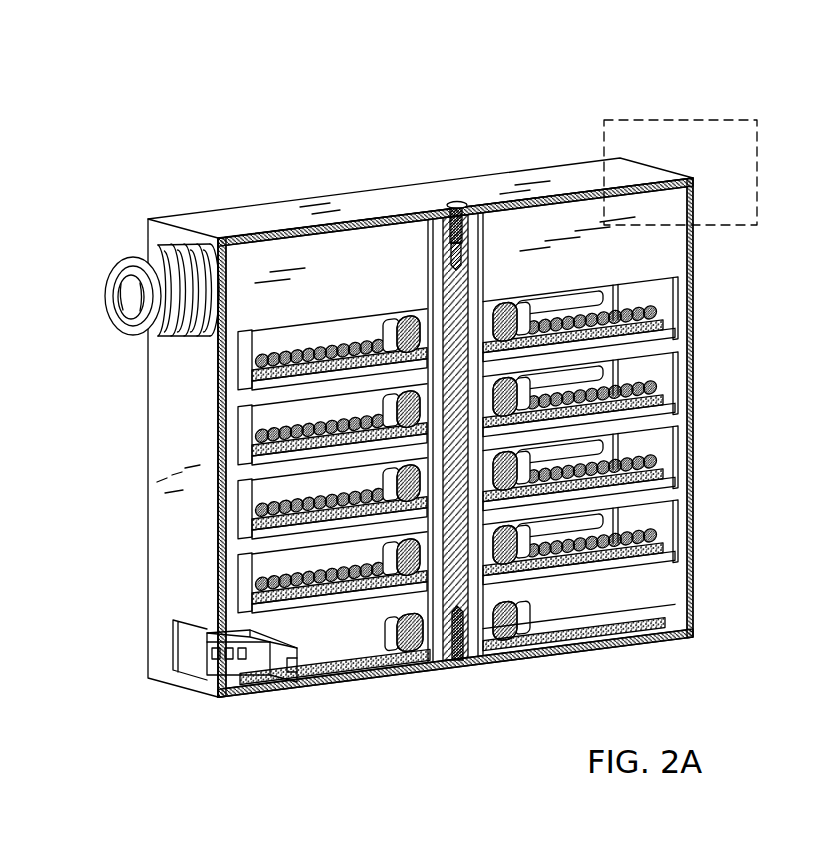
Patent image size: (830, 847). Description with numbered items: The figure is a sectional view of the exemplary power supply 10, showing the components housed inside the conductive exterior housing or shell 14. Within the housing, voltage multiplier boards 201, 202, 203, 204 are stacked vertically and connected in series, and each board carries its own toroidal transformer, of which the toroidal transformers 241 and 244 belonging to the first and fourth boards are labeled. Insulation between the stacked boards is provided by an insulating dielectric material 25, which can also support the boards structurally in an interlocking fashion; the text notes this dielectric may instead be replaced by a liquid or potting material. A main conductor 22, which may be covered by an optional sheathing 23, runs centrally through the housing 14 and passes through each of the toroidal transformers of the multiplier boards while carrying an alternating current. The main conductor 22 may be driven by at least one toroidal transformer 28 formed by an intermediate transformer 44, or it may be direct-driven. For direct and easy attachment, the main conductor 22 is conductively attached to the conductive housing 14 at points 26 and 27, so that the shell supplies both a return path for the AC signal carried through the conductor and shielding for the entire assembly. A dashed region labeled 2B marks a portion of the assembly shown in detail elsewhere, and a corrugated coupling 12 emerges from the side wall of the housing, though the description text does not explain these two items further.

The power supply 10 is at (298, 78).
The cable coupling / conduit 12 is at (125, 260).
The housing 14 is at (170, 540).
The detail region of FIG. 2B is at (683, 120).
The voltage multiplier board 201 is at (653, 330).
The voltage multiplier board 202 is at (653, 404).
The voltage multiplier board 203 is at (653, 478).
The voltage multiplier board 204 is at (653, 552).
The main conductor 22 is at (462, 595).
The sheathing 23 is at (438, 624).
The toroidal transformer 241 is at (401, 318).
The toroidal transformer 244 is at (390, 574).
The insulating dielectric material 25 is at (657, 252).
The attachment point 26 is at (447, 204).
The attachment point 27 is at (456, 614).
The toroidal transformer 28 is at (513, 621).
The intermediate transformer 44 is at (610, 620).